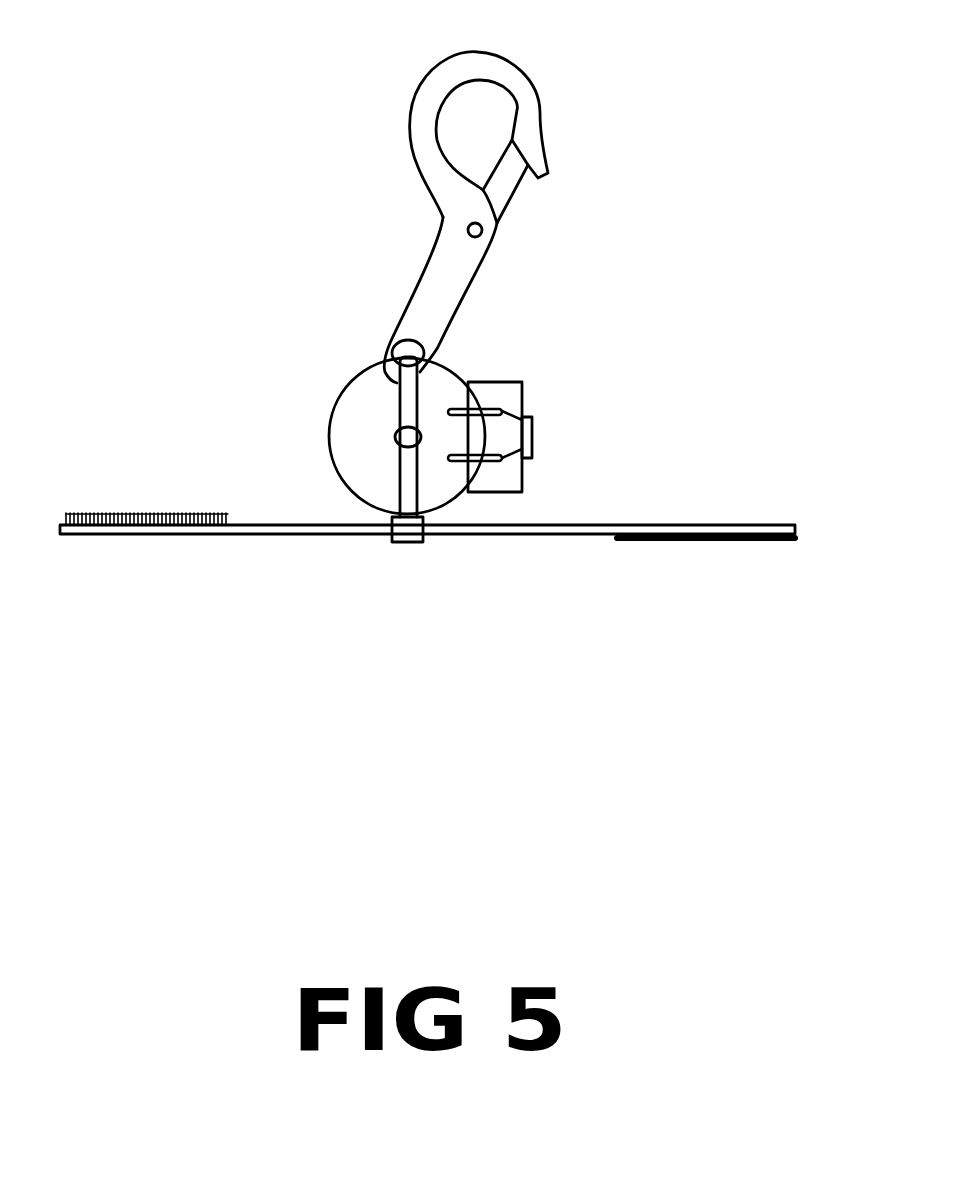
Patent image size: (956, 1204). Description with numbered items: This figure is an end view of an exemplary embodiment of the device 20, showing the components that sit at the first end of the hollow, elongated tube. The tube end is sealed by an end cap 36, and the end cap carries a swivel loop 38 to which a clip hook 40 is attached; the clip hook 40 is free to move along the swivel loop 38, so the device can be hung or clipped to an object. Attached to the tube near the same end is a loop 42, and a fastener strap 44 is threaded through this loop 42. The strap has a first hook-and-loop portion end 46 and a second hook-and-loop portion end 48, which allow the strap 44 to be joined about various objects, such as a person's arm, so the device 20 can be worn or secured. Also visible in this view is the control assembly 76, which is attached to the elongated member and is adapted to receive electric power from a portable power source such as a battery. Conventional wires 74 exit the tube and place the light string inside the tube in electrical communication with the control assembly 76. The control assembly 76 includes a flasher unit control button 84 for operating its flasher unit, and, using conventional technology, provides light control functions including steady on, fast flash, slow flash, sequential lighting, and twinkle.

The device 20 is at (622, 289).
The end cap 36 is at (447, 367).
The swivel loop 38 is at (400, 383).
The clip hook 40 is at (503, 56).
The loop 42 is at (407, 530).
The fastener strap 44 is at (570, 532).
The first hook-and-loop portion end 46 is at (795, 540).
The second hook-and-loop portion end 48 is at (60, 530).
The wires 74 is at (532, 419).
The control assembly 76 is at (522, 382).
The flasher unit control button 84 is at (532, 458).